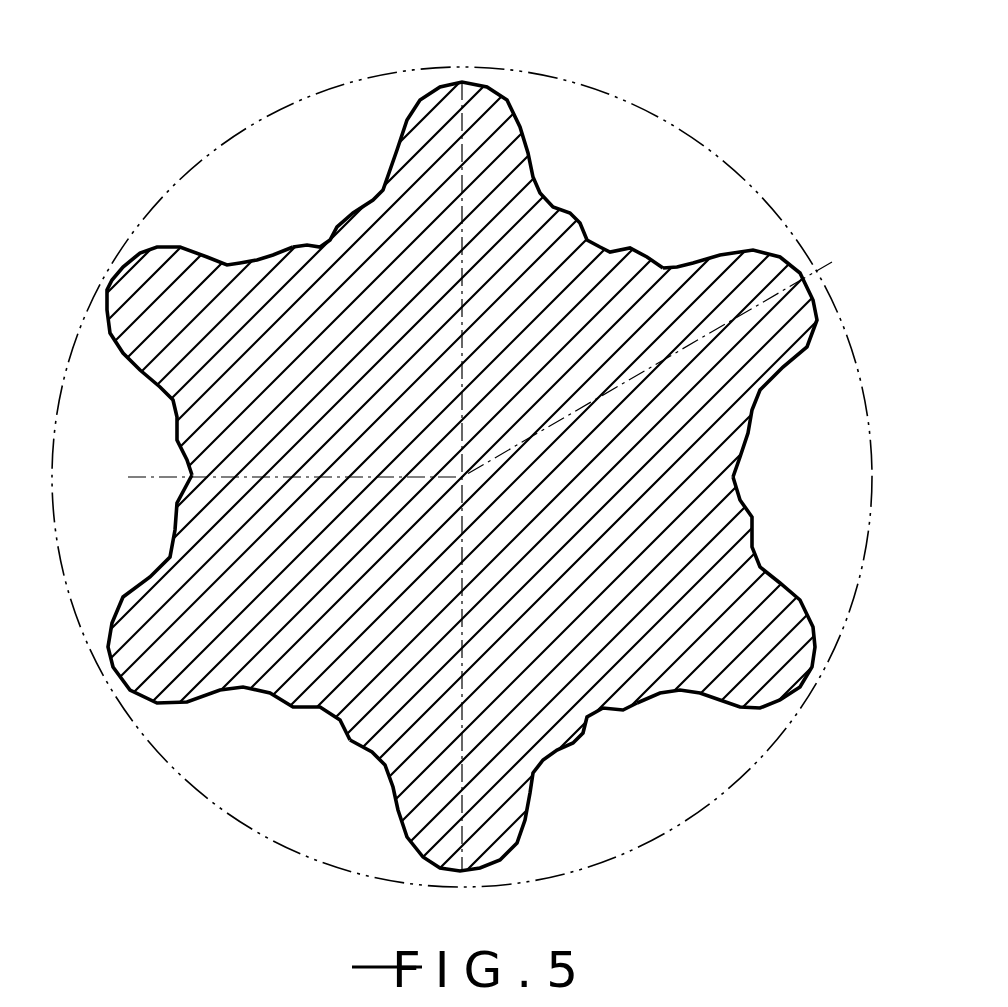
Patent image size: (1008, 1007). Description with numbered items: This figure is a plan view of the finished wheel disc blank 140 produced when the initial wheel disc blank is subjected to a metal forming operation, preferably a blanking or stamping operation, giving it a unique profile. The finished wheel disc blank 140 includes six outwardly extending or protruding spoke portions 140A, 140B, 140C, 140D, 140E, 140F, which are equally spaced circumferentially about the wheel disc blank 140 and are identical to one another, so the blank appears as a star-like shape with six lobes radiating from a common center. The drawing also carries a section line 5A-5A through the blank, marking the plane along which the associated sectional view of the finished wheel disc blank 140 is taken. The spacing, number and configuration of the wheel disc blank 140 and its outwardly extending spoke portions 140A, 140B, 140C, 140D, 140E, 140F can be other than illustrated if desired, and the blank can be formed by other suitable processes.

The finished wheel disc blank 140 is at (652, 810).
The spoke portion 140A is at (487, 107).
The spoke portion 140B is at (780, 320).
The spoke portion 140C is at (788, 676).
The spoke portion 140D is at (488, 826).
The spoke portion 140E is at (148, 662).
The spoke portion 140F is at (140, 287).
The section line 5A- 5A is at (120, 462).